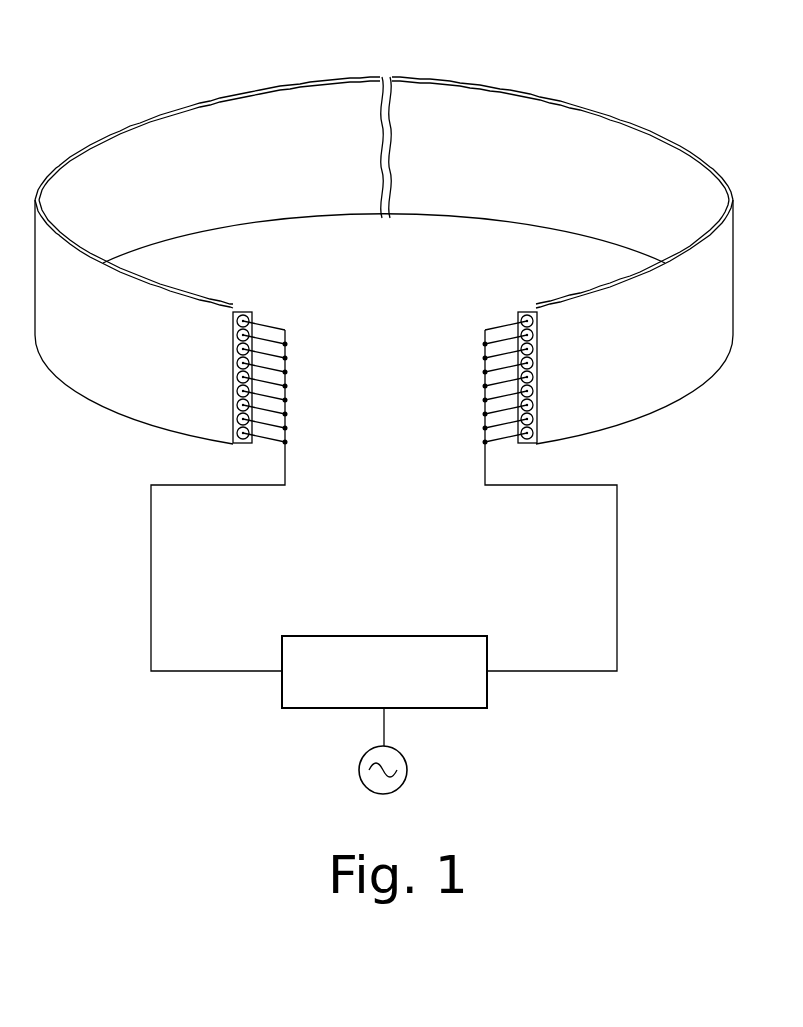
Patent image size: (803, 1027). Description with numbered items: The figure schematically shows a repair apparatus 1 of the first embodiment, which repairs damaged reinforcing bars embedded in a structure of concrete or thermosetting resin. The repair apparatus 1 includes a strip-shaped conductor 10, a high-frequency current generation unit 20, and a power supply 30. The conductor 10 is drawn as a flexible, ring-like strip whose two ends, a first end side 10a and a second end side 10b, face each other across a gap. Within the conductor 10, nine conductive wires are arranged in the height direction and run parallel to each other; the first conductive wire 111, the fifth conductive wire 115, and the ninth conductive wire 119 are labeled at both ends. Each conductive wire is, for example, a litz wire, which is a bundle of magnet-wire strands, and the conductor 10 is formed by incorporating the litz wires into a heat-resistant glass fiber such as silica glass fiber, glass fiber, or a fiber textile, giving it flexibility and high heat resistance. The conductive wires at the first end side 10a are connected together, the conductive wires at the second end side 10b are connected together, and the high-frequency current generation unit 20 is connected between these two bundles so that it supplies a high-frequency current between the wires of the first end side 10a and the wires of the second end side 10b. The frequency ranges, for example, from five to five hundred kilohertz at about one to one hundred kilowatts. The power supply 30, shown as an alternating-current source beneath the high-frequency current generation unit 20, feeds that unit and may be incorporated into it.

The repair apparatus 1 is at (540, 72).
The strip-shaped conductor 10 is at (349, 209).
The first end side 10a is at (243, 312).
The second end side 10b is at (528, 312).
The conductive wire 111 is at (562, 458).
The conductive wire 115 is at (558, 380).
The conductive wire 119 is at (253, 318).
The high-frequency current generation unit 20 is at (412, 636).
The power supply 30 is at (407, 772).